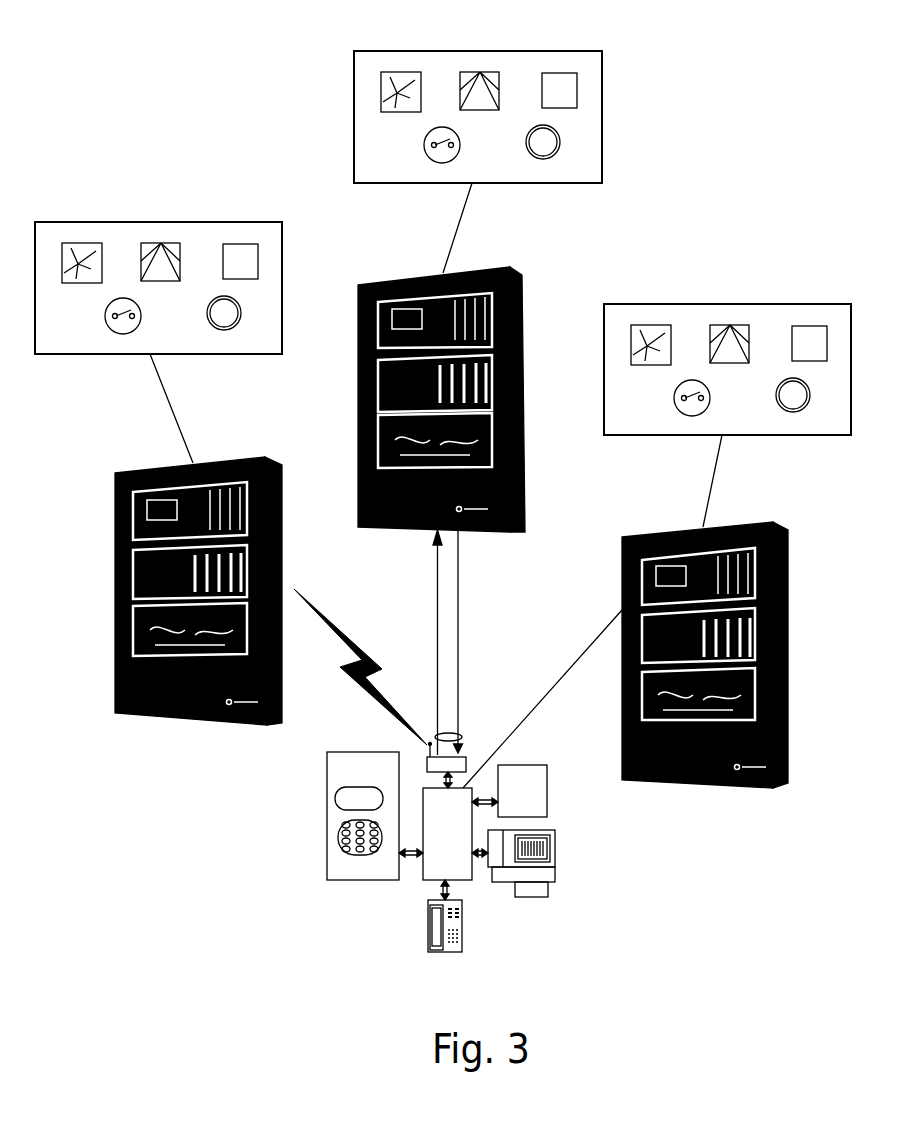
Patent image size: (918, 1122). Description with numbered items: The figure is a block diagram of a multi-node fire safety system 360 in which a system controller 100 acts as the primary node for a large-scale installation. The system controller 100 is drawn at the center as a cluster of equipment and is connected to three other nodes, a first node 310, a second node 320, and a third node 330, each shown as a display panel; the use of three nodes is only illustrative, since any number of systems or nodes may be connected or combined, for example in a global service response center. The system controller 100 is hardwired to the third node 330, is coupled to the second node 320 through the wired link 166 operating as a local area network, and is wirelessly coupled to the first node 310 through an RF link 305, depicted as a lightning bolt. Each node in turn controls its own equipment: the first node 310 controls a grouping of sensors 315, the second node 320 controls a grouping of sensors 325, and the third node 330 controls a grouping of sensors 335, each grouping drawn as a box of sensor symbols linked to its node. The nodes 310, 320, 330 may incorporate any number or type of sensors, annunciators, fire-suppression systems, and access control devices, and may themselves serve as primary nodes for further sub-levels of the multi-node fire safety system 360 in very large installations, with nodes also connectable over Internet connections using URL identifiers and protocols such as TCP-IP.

The system controller 100 is at (384, 915).
The wired link 166 is at (465, 737).
The RF link 305 is at (355, 680).
The first node 310 is at (282, 568).
The grouping of sensors 315 is at (122, 222).
The second node 320 is at (525, 482).
The grouping of sensors 325 is at (418, 51).
The third node 330 is at (788, 713).
The grouping of sensors 335 is at (672, 304).
The multi-node fire safety system 360 is at (671, 901).